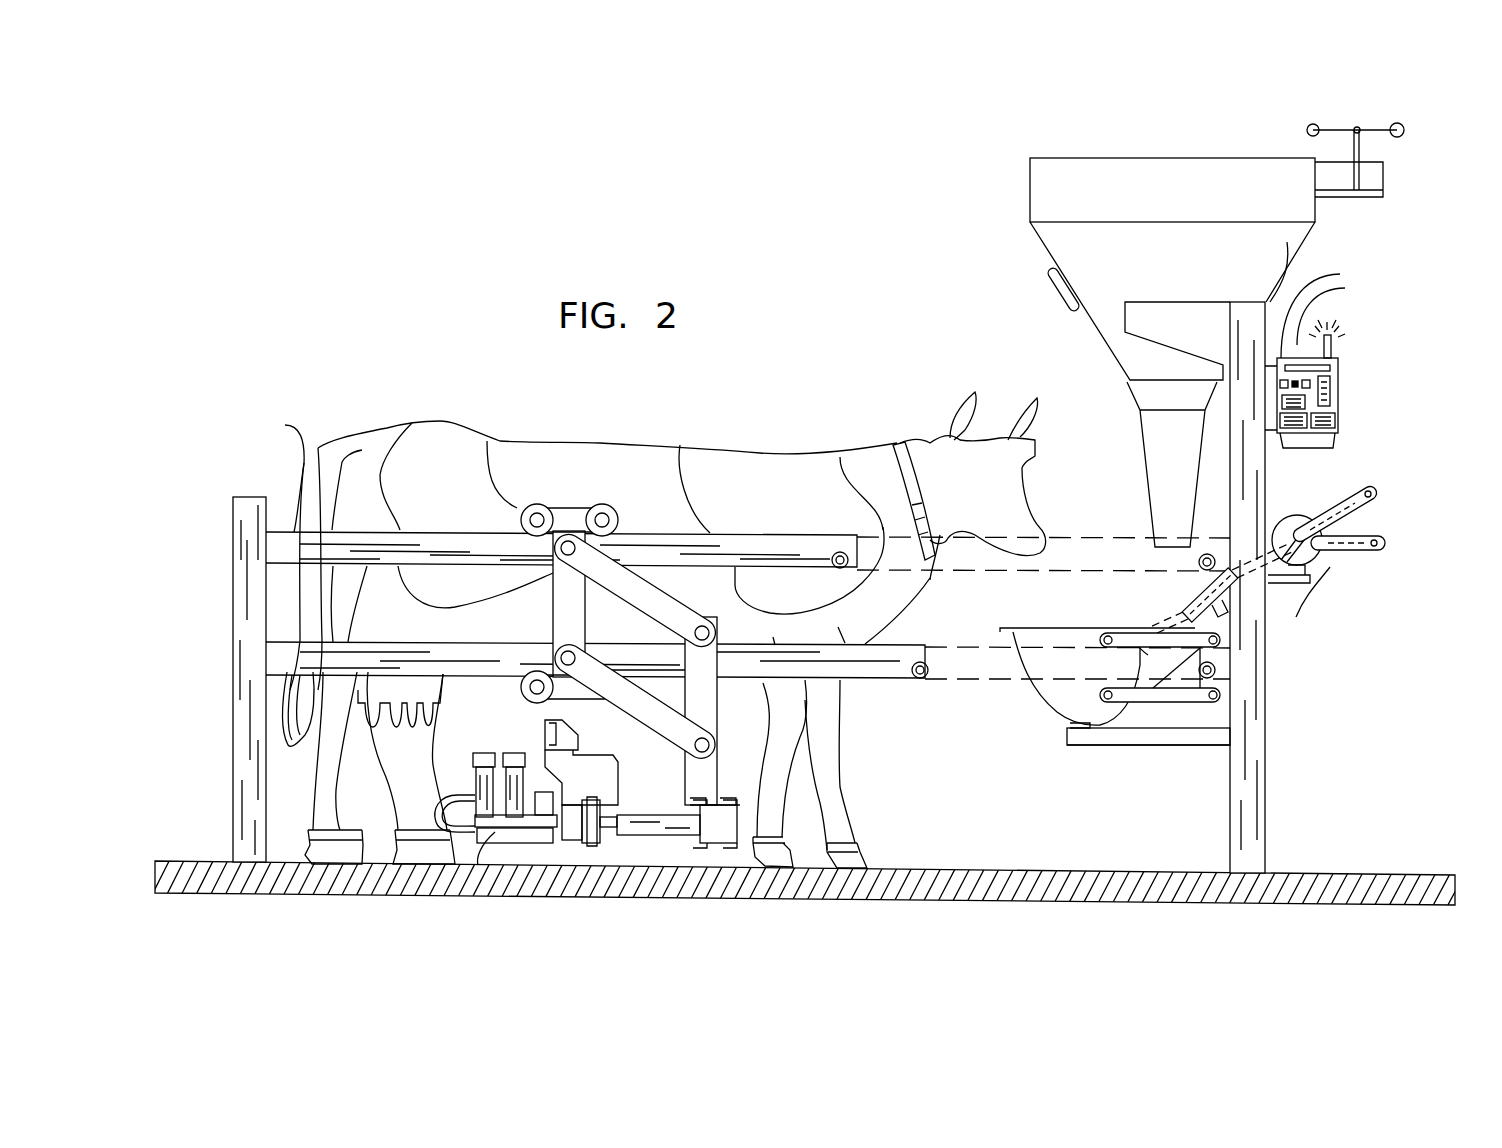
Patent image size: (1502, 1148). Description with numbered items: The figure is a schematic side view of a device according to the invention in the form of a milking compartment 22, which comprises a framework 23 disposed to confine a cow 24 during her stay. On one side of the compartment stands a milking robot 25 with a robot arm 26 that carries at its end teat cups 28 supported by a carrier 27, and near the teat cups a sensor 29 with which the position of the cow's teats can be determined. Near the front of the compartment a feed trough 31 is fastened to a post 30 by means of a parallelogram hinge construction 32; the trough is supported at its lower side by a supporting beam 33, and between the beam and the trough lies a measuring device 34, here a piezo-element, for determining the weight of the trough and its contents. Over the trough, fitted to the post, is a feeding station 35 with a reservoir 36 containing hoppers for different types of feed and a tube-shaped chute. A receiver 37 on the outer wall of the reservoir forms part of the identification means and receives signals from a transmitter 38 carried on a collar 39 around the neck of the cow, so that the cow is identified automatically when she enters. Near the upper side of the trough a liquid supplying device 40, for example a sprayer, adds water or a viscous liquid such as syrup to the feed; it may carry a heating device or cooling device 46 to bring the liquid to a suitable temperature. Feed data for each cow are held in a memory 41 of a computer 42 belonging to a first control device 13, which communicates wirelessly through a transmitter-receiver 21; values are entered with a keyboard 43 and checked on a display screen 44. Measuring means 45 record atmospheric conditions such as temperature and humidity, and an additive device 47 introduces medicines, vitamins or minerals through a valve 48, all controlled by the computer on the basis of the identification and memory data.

The first control device 13 is at (1382, 370).
The transmitter-receiver 21 is at (1336, 345).
The milking compartment 22 is at (952, 838).
The framework 23 is at (599, 630).
The cow 24 is at (445, 483).
The milking robot 25 is at (568, 841).
The robot arm 26 is at (632, 835).
The carrier 27 is at (451, 866).
The teat cups 28 is at (473, 757).
The sensor 29 is at (567, 743).
The post 30 is at (248, 828).
The feed trough 31 is at (1080, 640).
The parallelogram hinge construction 32 is at (1140, 695).
The supporting beam 33 is at (1108, 737).
The measuring device 34 is at (1068, 728).
The feeding station 35 is at (1028, 210).
The reservoir 36 is at (1287, 242).
The receiver 37 is at (1060, 283).
The transmitter 38 is at (940, 575).
The collar 39 is at (895, 443).
The liquid supplying device 40 is at (1226, 588).
The memory 41 is at (1328, 395).
The computer 42 is at (1340, 274).
The keyboard 43 is at (1338, 425).
The display screen 44 is at (1322, 370).
The measuring means 45 is at (1388, 170).
The heating device or cooling device 46 is at (1266, 640).
The additive device 47 is at (1372, 493).
The valve 48 is at (1287, 528).